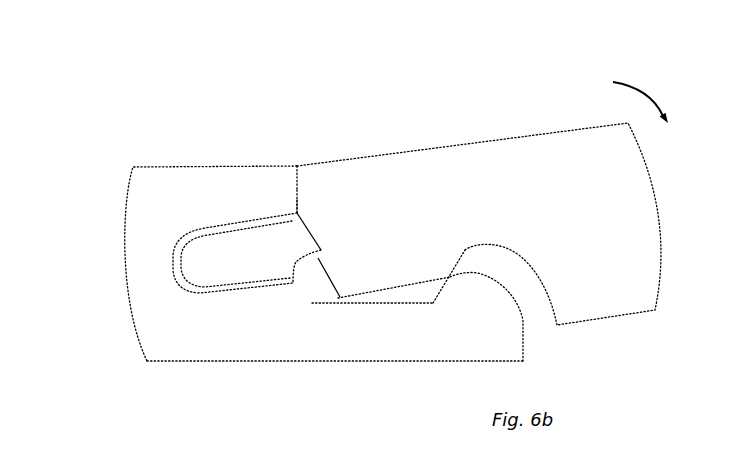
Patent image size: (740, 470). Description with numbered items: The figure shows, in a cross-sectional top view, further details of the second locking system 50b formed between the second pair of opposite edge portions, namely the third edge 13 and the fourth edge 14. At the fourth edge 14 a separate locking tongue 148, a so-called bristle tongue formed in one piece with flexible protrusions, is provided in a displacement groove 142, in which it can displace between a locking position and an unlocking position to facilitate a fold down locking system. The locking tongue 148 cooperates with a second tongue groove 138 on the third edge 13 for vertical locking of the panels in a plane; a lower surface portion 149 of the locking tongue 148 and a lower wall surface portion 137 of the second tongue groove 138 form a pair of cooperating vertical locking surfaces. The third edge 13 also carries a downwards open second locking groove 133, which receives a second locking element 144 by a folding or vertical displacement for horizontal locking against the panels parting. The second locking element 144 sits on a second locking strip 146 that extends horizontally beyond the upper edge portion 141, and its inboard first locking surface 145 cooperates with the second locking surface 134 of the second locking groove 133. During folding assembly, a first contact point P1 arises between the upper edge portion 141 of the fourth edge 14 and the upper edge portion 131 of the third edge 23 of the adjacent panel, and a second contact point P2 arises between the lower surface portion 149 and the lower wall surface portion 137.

The second locking system 50b is at (97, 79).
The third edge 13 is at (391, 145).
The fourth edge 14 is at (187, 140).
The third edge of adjacent second panel 23 is at (503, 114).
The first contact point P1 is at (300, 160).
The second contact point P2 is at (310, 269).
The upper edge portion 131 is at (302, 207).
The second locking groove 133 is at (513, 253).
The second locking surface 134 is at (462, 260).
The lower wall surface portion 137 is at (323, 254).
The second tongue groove 138 is at (319, 233).
The upper edge portion 141 is at (297, 198).
The displacement groove 142 is at (180, 275).
The second locking element 144 is at (478, 300).
The first locking surface 145 is at (440, 297).
The second locking strip 146 is at (357, 350).
The locking tongue 148 is at (237, 282).
The lower surface portion 149 is at (313, 253).